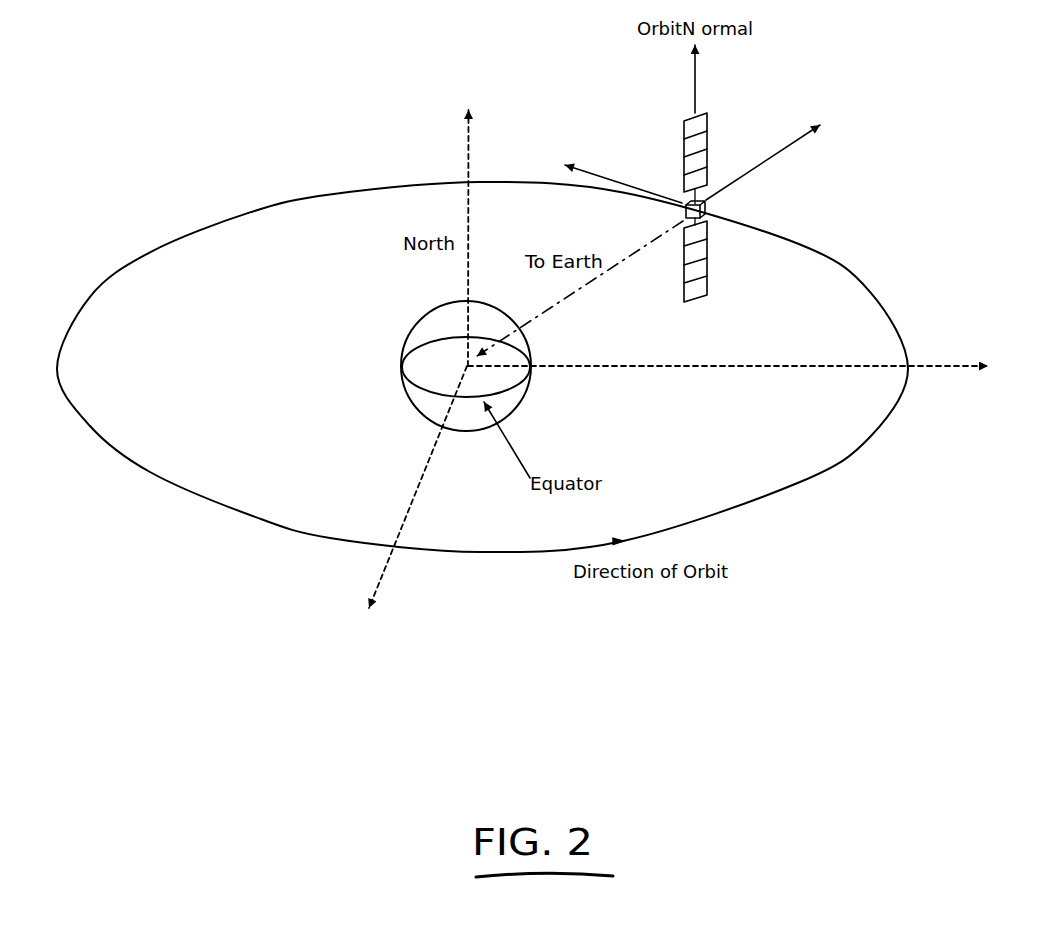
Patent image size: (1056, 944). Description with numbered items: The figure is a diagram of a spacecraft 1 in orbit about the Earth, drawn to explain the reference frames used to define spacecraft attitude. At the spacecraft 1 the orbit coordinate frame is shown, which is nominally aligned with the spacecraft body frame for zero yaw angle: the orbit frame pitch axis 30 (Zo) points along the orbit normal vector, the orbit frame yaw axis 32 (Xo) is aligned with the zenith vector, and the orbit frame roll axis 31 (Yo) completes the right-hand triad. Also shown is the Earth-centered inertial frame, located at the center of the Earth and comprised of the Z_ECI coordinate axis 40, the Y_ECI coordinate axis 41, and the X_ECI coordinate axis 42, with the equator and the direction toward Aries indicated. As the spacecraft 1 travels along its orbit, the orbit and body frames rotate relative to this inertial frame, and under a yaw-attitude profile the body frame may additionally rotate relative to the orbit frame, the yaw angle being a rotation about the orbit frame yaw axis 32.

The spacecraft 1 is at (733, 155).
The orbit frame pitch axis 30 is at (787, 86).
The orbit frame roll axis 31 is at (611, 182).
The orbit frame yaw axis 32 is at (842, 162).
The Z_ECI coordinate axis 40 is at (434, 236).
The Y_ECI coordinate axis 41 is at (745, 391).
The X_ECI coordinate axis 42 is at (384, 492).